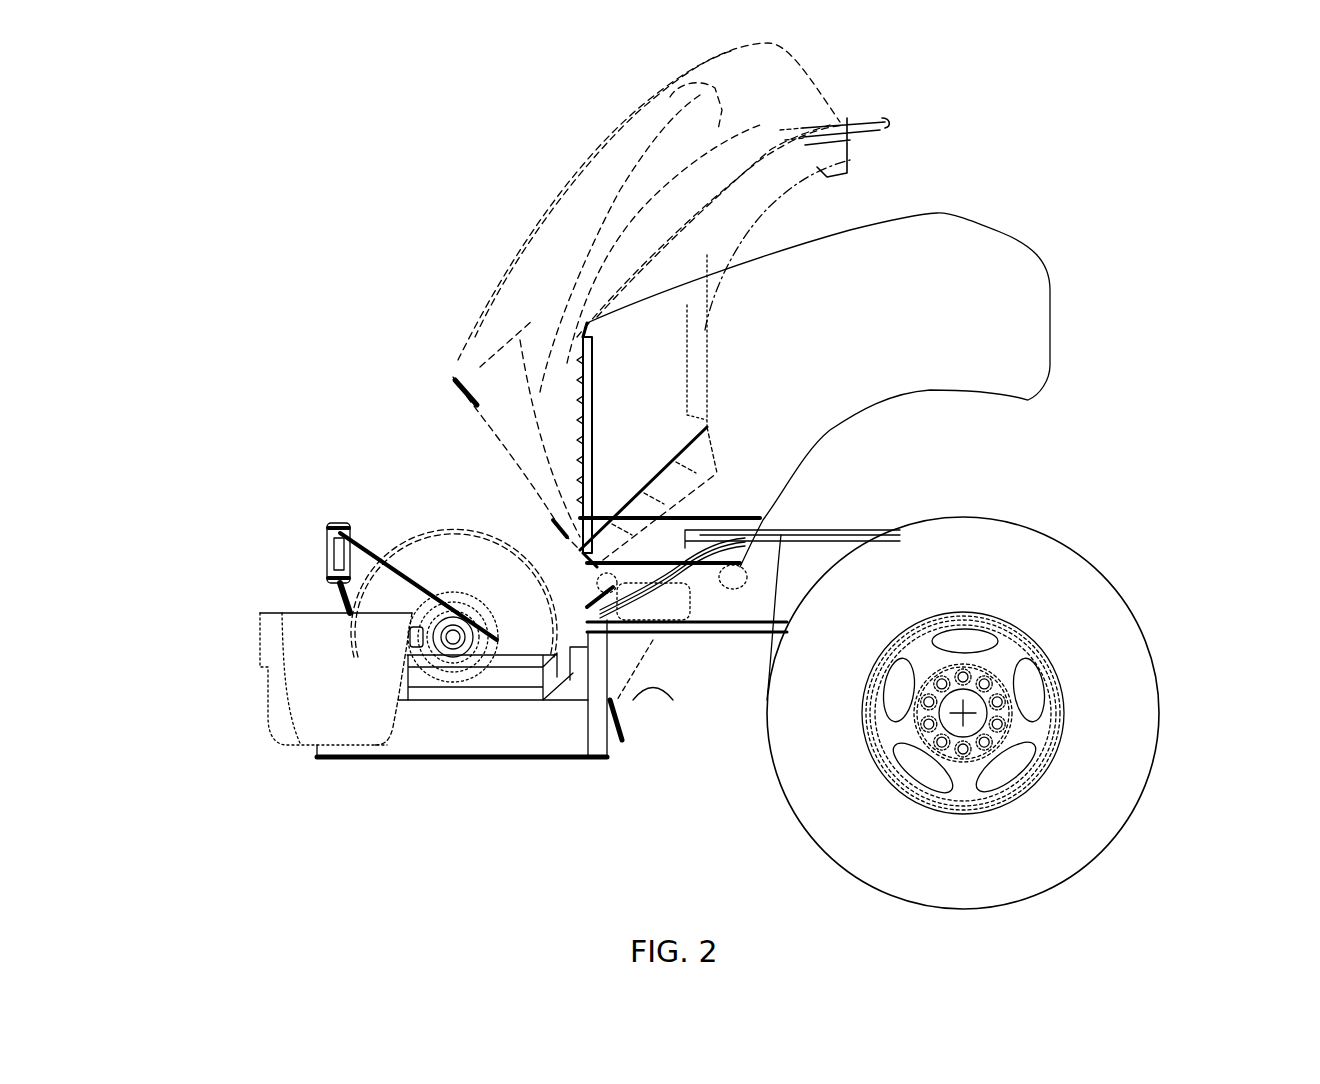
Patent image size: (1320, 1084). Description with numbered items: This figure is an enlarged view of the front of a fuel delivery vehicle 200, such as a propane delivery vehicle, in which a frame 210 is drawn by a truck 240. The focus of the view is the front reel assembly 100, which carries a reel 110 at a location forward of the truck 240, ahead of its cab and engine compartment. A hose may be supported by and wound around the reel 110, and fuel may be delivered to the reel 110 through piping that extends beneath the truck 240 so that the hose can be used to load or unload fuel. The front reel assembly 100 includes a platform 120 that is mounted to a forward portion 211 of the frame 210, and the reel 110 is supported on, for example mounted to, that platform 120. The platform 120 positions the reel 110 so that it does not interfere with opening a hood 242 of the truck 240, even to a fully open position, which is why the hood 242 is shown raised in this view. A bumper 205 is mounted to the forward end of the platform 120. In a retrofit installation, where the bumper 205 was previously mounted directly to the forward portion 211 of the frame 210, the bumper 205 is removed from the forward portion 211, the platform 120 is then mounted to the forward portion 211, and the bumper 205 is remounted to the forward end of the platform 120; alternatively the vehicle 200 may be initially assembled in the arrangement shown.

The front reel assembly 100 is at (216, 557).
The reel 110 is at (463, 530).
The platform 120 is at (470, 760).
The fuel delivery vehicle 200 is at (1240, 268).
The bumper 205 is at (257, 643).
The frame 210 is at (822, 532).
The forward portion 211 is at (642, 683).
The truck 240 is at (440, 156).
The hood 242 is at (487, 303).